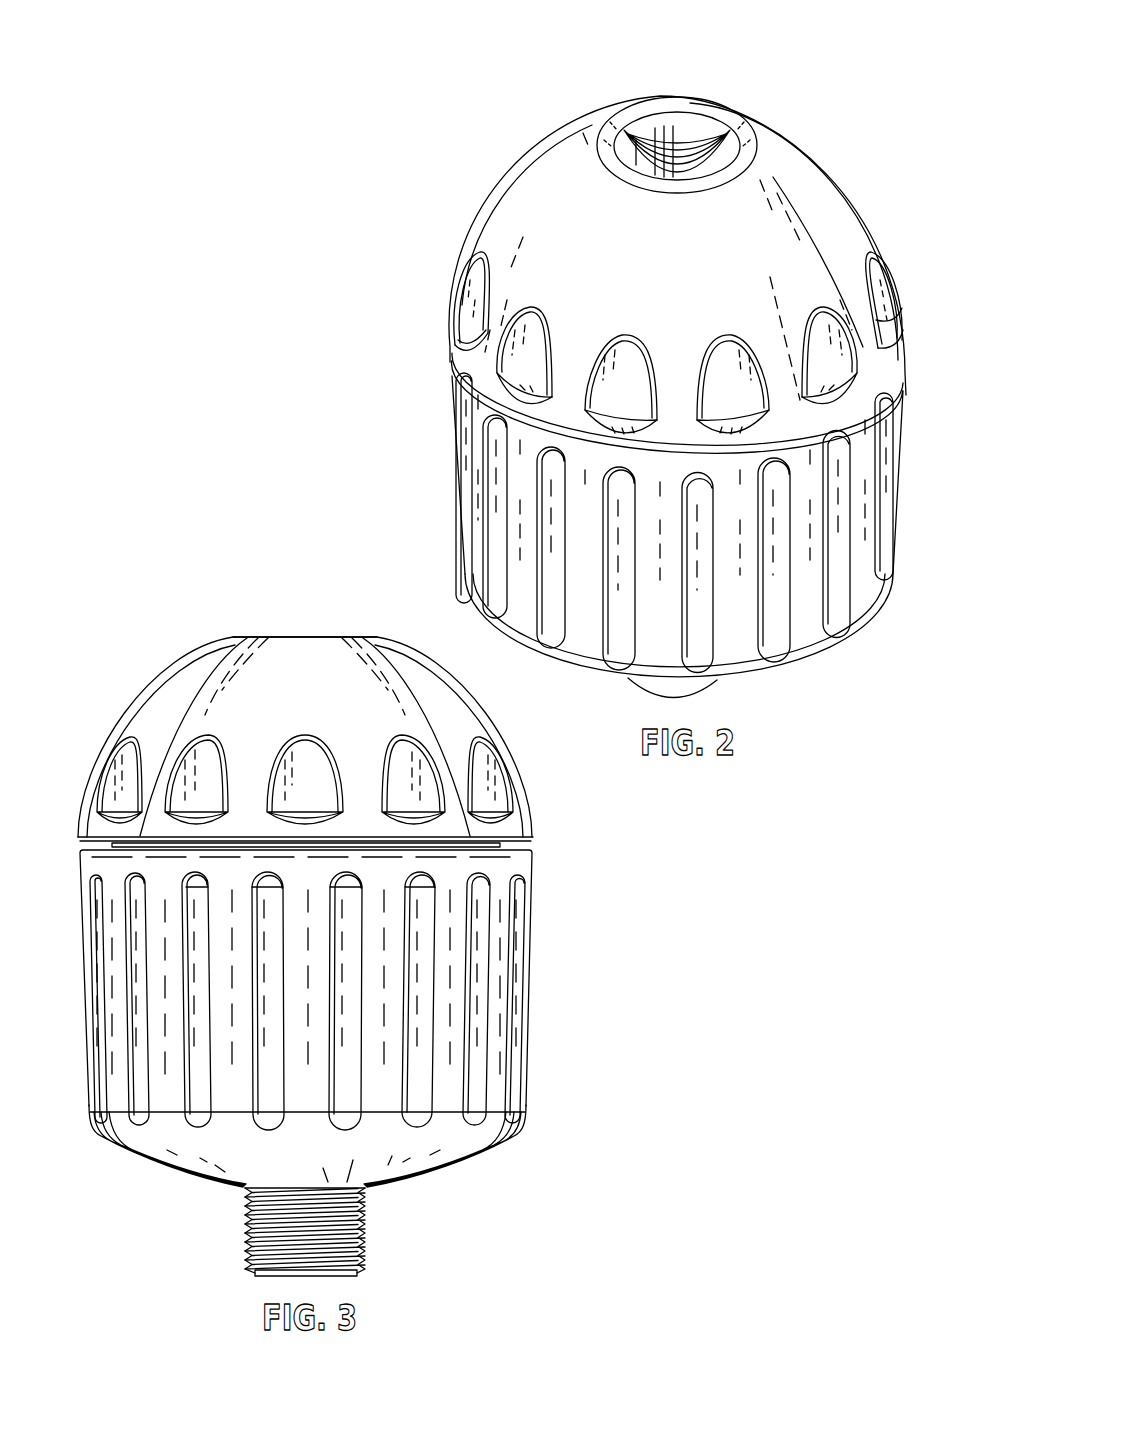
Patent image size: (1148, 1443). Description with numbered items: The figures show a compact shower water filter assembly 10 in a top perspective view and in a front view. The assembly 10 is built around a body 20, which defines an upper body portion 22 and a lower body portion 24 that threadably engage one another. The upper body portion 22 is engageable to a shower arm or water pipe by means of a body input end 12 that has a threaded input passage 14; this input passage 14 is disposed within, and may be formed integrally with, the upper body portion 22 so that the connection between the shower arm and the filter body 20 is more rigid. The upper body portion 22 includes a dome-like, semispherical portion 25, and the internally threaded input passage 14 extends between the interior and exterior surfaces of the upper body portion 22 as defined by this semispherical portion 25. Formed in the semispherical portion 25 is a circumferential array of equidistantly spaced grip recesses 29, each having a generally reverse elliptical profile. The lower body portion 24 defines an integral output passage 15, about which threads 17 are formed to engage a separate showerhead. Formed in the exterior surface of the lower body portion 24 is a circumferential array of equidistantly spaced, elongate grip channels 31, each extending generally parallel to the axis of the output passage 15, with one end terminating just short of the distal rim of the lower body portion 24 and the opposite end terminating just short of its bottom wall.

In FIG. 2, the compact shower water filter assembly 10 is at (458, 151).
In FIG. 3, the compact shower water filter assembly 10 is at (130, 636).
In FIG. 2, the body input end 12 is at (732, 123).
In FIG. 2, the threaded input passage 14 is at (658, 140).
In FIG. 3, the threaded input passage 14 is at (320, 637).
In FIG. 2, the output passage 15 is at (718, 683).
In FIG. 3, the output passage 15 is at (287, 1273).
In FIG. 3, the threads 17 is at (365, 1217).
In FIG. 2, the body 20 is at (885, 210).
In FIG. 3, the body 20 is at (540, 858).
In FIG. 2, the upper body portion 22 is at (826, 148).
In FIG. 3, the upper body portion 22 is at (502, 743).
In FIG. 2, the lower body portion 24 is at (908, 422).
In FIG. 3, the lower body portion 24 is at (527, 955).
In FIG. 2, the semispherical portion 25 is at (535, 213).
In FIG. 2, the grip recesses 29 is at (527, 347).
In FIG. 3, the grip recesses 29 is at (193, 785).
In FIG. 2, the grip channels 31 is at (555, 562).
In FIG. 3, the grip channels 31 is at (196, 1080).